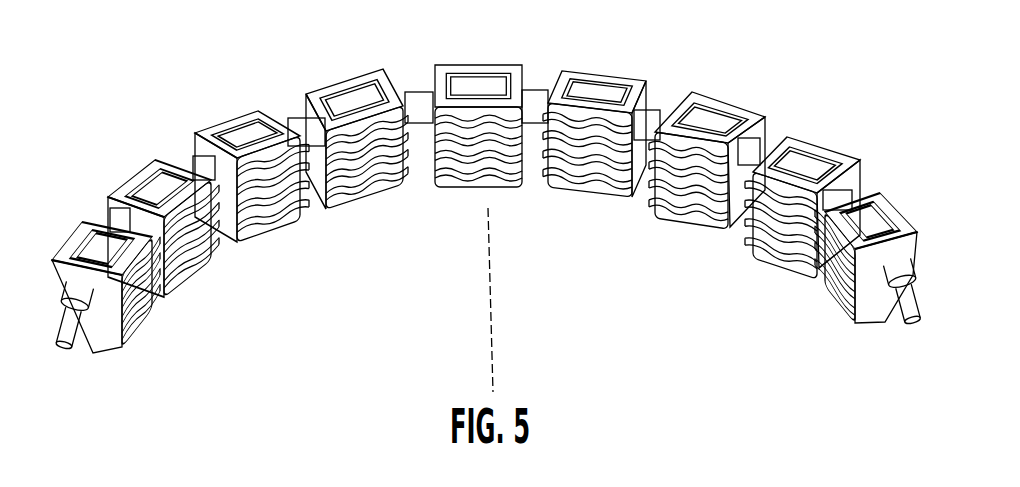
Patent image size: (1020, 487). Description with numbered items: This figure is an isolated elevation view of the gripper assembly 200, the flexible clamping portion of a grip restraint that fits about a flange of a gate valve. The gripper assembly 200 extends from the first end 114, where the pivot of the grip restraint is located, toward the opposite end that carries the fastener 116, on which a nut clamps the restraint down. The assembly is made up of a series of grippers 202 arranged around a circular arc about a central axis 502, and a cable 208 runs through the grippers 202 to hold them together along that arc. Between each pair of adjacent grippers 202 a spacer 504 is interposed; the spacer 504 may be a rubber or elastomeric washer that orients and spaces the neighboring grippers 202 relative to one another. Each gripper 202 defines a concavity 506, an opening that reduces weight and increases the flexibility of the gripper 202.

The gripper assembly 200 is at (173, 106).
The gripper 202 is at (273, 232).
The cable 208 is at (66, 348).
The first end 114 is at (45, 356).
The fastener 116 is at (930, 341).
The central axis 502 is at (493, 343).
The spacer 504 is at (537, 104).
The concavity 506 is at (604, 94).